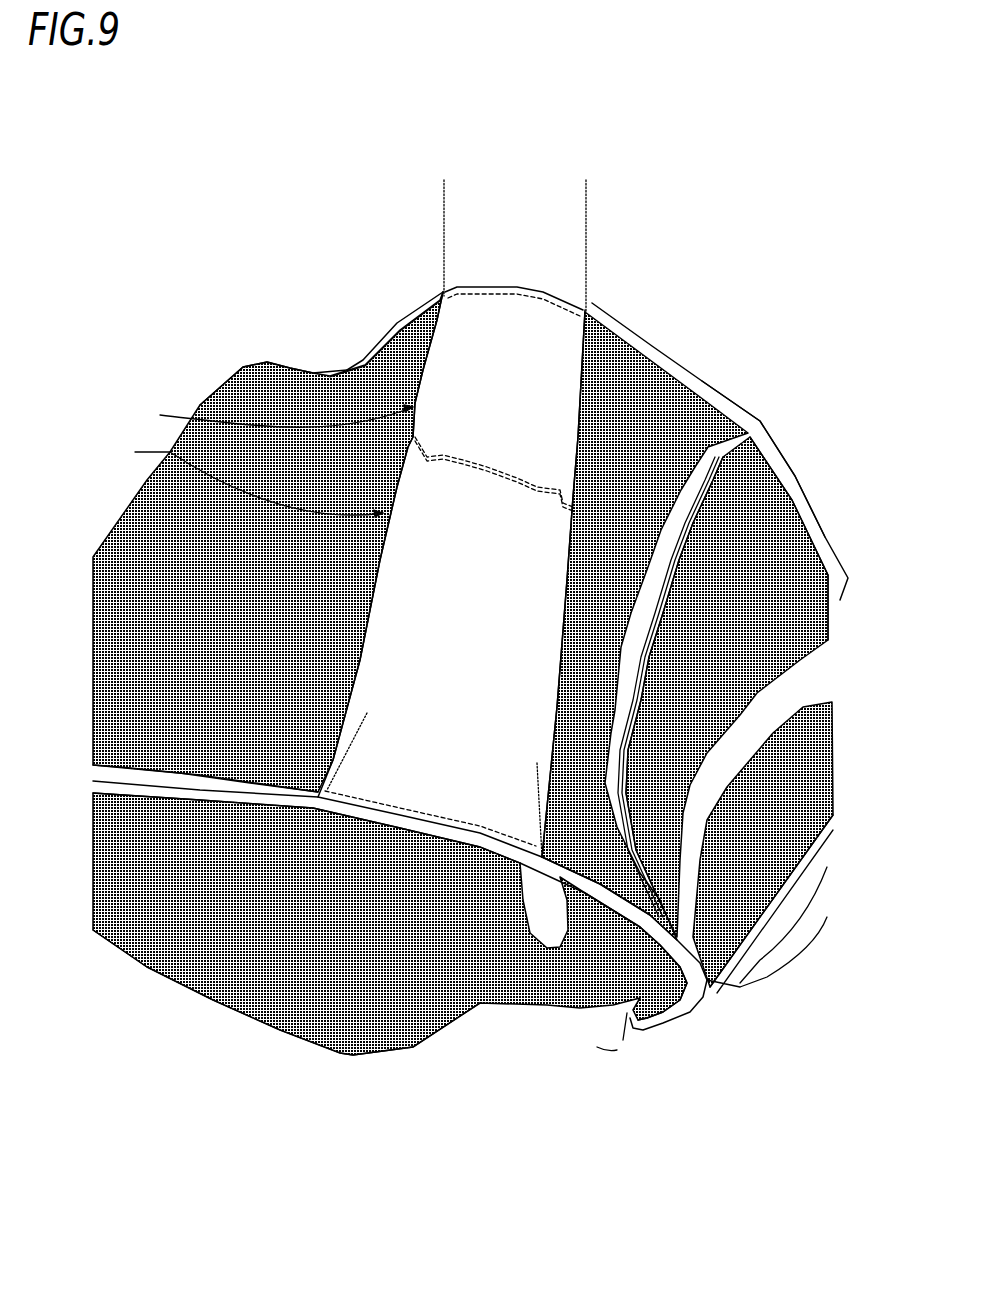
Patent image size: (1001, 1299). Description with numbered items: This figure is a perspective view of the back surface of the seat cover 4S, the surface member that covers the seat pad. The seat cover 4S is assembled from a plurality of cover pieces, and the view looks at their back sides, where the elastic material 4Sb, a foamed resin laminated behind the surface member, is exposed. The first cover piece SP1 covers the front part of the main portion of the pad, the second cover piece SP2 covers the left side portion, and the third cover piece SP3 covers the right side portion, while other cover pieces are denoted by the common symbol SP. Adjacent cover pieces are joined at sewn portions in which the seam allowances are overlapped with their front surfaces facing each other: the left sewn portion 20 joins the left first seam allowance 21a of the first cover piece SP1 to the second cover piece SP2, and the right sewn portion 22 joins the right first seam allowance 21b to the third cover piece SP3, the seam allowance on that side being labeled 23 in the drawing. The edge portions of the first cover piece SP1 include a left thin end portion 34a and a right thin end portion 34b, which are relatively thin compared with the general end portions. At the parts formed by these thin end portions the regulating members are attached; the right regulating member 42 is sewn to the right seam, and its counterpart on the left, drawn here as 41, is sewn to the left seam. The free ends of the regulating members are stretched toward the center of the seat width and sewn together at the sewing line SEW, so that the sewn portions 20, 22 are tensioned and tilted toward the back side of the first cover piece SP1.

The seat cover 4S is at (665, 163).
The elastic material 4Sb is at (256, 582).
The left sewn portion 20 is at (430, 818).
The left first seam allowance 21a is at (153, 765).
The right first seam allowance 21b is at (398, 330).
The right sewn portion 22 is at (513, 286).
The folded portion 23 is at (678, 347).
The left thin end portion 34a is at (537, 763).
The right thin end portion 34b is at (586, 188).
The seam line 41 is at (247, 481).
The right regulating member 42 is at (273, 416).
The sewing line SEW is at (493, 463).
The cover piece SP is at (757, 560).
The first cover piece SP1 is at (270, 393).
The second cover piece SP2 is at (362, 1008).
The third cover piece SP3 is at (730, 390).